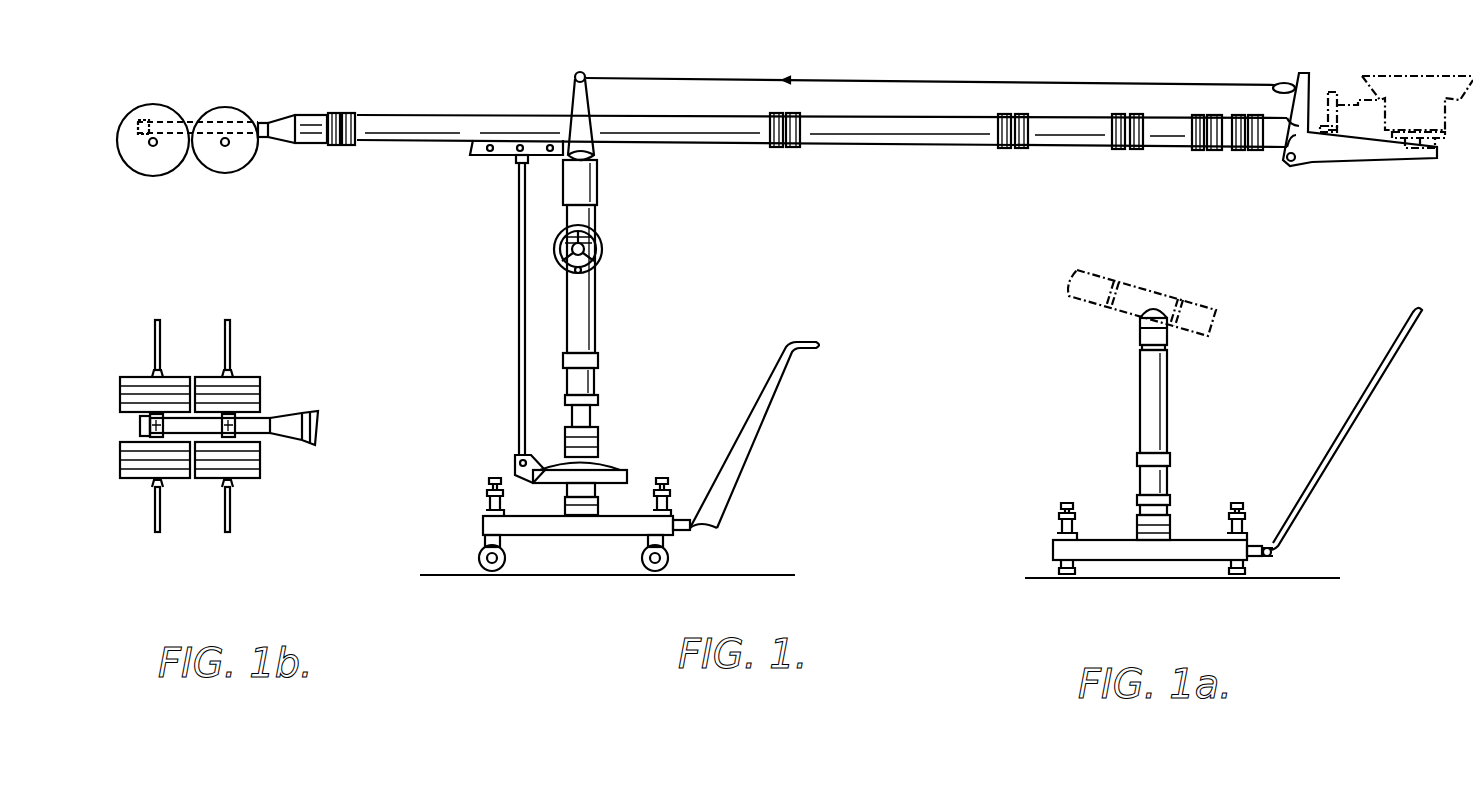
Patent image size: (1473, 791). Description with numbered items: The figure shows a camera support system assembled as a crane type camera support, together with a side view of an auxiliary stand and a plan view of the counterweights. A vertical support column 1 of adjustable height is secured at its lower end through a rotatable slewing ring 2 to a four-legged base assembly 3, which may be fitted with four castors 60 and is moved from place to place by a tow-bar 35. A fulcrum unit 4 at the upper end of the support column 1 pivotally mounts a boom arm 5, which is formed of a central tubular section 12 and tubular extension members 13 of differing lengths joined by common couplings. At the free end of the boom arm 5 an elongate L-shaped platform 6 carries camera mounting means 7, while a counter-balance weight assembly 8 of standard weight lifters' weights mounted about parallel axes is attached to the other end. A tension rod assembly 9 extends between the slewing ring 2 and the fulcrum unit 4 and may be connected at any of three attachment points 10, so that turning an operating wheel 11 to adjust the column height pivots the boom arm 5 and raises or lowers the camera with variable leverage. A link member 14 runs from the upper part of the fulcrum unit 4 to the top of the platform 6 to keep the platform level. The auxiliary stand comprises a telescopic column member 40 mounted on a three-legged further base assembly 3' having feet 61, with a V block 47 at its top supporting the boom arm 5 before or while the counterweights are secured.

In FIG. 1, the vertical support column 1 is at (595, 325).
In FIG. 1, the slewing ring 2 is at (612, 468).
In FIG. 1, the base assembly 3 is at (607, 551).
In FIG. 1A, the further column base assembly 3' is at (1223, 474).
In FIG. 1, the fulcrum unit 4 is at (586, 188).
In FIG. 1, the boom arm 5 is at (520, 117).
In FIG. 1, the L-shaped platform 6 is at (1313, 82).
In FIG. 1, the camera mounting means 7 is at (1408, 72).
In FIG. 1, the counter-balance weight assembly 8 is at (197, 97).
In FIG. 1B, the counter-balance weight assembly 8 is at (196, 542).
In FIG. 1, the tension rod assembly 9 is at (518, 337).
In FIG. 1, the attachment points 10 is at (505, 152).
In FIG. 1, the operating wheel 11 is at (603, 250).
In FIG. 1, the central tubular section 12 is at (680, 128).
In FIG. 1, the tubular extension members 13 is at (1158, 130).
In FIG. 1, the link member 14 is at (828, 77).
In FIG. 1, the tow-bar 35 is at (760, 442).
In FIG. 1A, the telescopic column member 40 is at (1150, 410).
In FIG. 1A, the V block 47 is at (1140, 327).
In FIG. 1, the castors 60 is at (478, 560).
In FIG. 1A, the feet 61 is at (1060, 573).